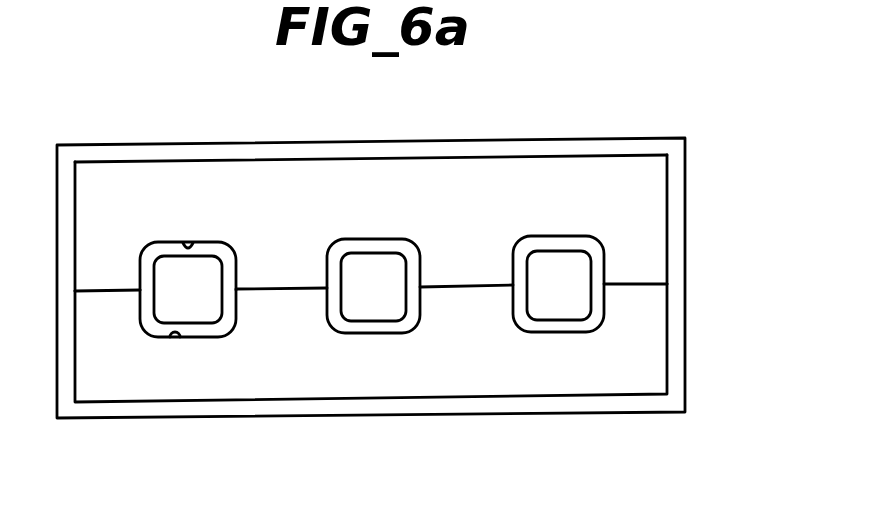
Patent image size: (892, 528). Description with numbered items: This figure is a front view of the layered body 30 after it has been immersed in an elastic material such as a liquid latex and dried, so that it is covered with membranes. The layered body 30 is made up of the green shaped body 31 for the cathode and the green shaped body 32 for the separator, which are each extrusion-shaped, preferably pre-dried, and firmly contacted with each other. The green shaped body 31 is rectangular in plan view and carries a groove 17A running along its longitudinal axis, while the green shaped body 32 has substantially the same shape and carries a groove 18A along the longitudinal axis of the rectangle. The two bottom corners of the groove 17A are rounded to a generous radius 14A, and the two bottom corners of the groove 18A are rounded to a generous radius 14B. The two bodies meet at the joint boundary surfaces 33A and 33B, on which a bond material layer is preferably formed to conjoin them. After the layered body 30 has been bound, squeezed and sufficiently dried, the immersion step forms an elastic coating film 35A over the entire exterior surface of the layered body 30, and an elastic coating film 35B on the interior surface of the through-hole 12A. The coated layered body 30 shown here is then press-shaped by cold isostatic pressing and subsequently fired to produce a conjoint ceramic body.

The layered body 30 is at (658, 150).
The green shaped body for the cathode 31 is at (676, 178).
The green shaped body for the separator 32 is at (677, 332).
The joint boundary surface 33A is at (98, 291).
The joint boundary surface 33B is at (298, 291).
The elastic coating film 35A is at (392, 150).
The elastic coating film 35B is at (558, 242).
The generous radius 14A is at (229, 241).
The generous radius 14B is at (143, 336).
The groove 17A is at (188, 248).
The groove 18A is at (180, 338).
The through-hole 12A is at (202, 300).